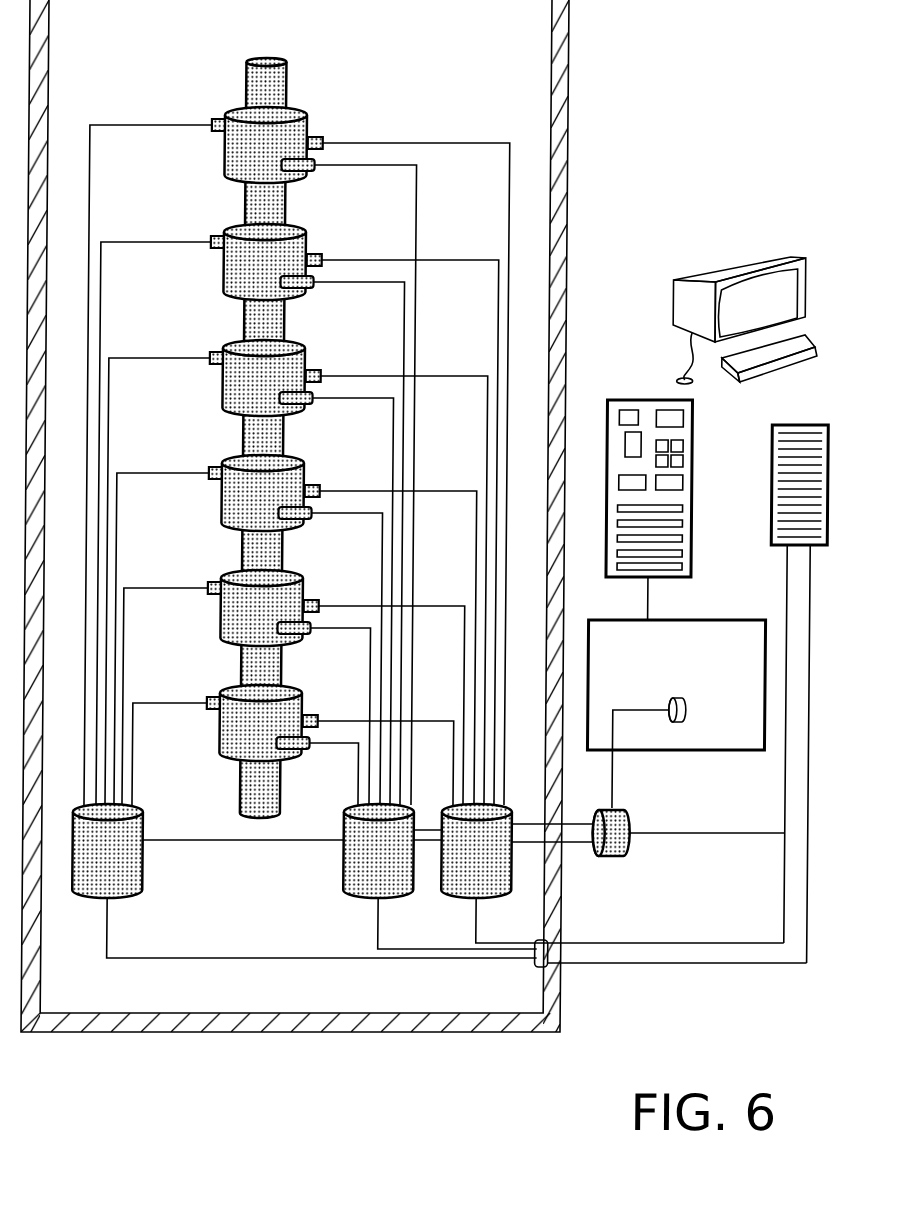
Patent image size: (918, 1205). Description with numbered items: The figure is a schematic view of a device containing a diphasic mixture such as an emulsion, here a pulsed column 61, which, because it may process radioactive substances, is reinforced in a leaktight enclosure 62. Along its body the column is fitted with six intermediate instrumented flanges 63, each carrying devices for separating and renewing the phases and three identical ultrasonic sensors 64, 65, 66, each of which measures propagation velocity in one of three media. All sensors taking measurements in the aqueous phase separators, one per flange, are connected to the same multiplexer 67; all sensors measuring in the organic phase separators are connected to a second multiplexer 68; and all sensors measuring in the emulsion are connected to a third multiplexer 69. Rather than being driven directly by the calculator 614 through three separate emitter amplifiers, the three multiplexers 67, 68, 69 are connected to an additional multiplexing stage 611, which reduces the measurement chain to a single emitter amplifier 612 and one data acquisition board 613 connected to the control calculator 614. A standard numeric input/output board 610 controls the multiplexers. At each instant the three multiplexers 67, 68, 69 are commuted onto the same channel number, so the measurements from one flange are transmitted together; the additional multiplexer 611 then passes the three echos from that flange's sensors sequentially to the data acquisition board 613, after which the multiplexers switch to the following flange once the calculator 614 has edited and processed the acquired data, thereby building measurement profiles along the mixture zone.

The pulsed column 61 is at (289, 63).
The leaktight enclosure 62 is at (563, 86).
The intermediate instrumented flange 63 is at (247, 232).
The ultrasonic sensor 64 is at (216, 123).
The ultrasonic sensor 65 is at (306, 173).
The ultrasonic sensor 66 is at (325, 141).
The multiplexer 67 is at (141, 875).
The second multiplexer 68 is at (360, 876).
The third multiplexer 69 is at (462, 886).
The numeric input/output board 610 is at (792, 490).
The additional multiplexing stage 611 is at (622, 857).
The emitter amplifier 612 is at (737, 737).
The data acquisition board 613 is at (687, 537).
The calculator 614 is at (758, 258).